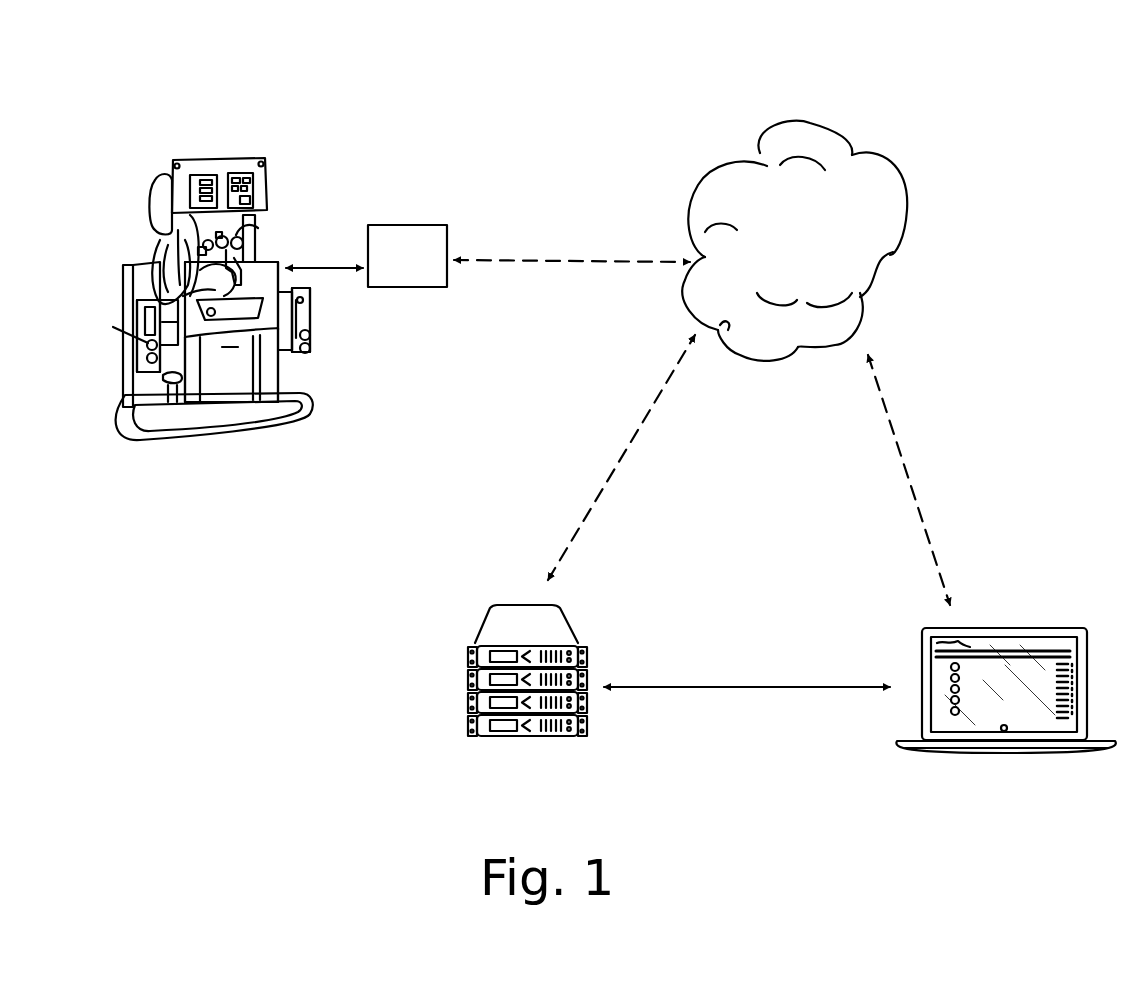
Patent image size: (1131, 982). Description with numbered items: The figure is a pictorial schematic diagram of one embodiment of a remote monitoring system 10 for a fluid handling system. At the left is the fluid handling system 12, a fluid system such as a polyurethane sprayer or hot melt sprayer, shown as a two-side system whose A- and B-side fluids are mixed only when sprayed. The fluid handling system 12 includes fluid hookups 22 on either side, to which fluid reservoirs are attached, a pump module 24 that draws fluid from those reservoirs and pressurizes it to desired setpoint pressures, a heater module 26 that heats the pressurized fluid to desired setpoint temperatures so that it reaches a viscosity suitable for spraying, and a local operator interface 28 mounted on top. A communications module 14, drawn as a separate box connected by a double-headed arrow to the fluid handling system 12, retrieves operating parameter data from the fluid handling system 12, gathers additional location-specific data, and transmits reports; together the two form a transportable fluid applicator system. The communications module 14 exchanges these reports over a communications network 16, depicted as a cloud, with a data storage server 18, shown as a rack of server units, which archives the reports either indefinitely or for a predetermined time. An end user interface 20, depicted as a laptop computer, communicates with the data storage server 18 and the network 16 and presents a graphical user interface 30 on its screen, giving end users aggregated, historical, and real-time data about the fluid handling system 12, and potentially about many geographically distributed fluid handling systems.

The remote monitoring system 10 is at (883, 93).
The fluid handling system 12 is at (162, 452).
The communications module 14 is at (418, 288).
The communications network 16 is at (880, 255).
The data storage server 18 is at (528, 738).
The end user interface 20 is at (1000, 758).
The fluid hookups 22 is at (133, 355).
The pump module 24 is at (250, 290).
The heater module 26 is at (228, 375).
The local operator interface 28 is at (203, 175).
The graphical user interface 30 is at (1005, 675).